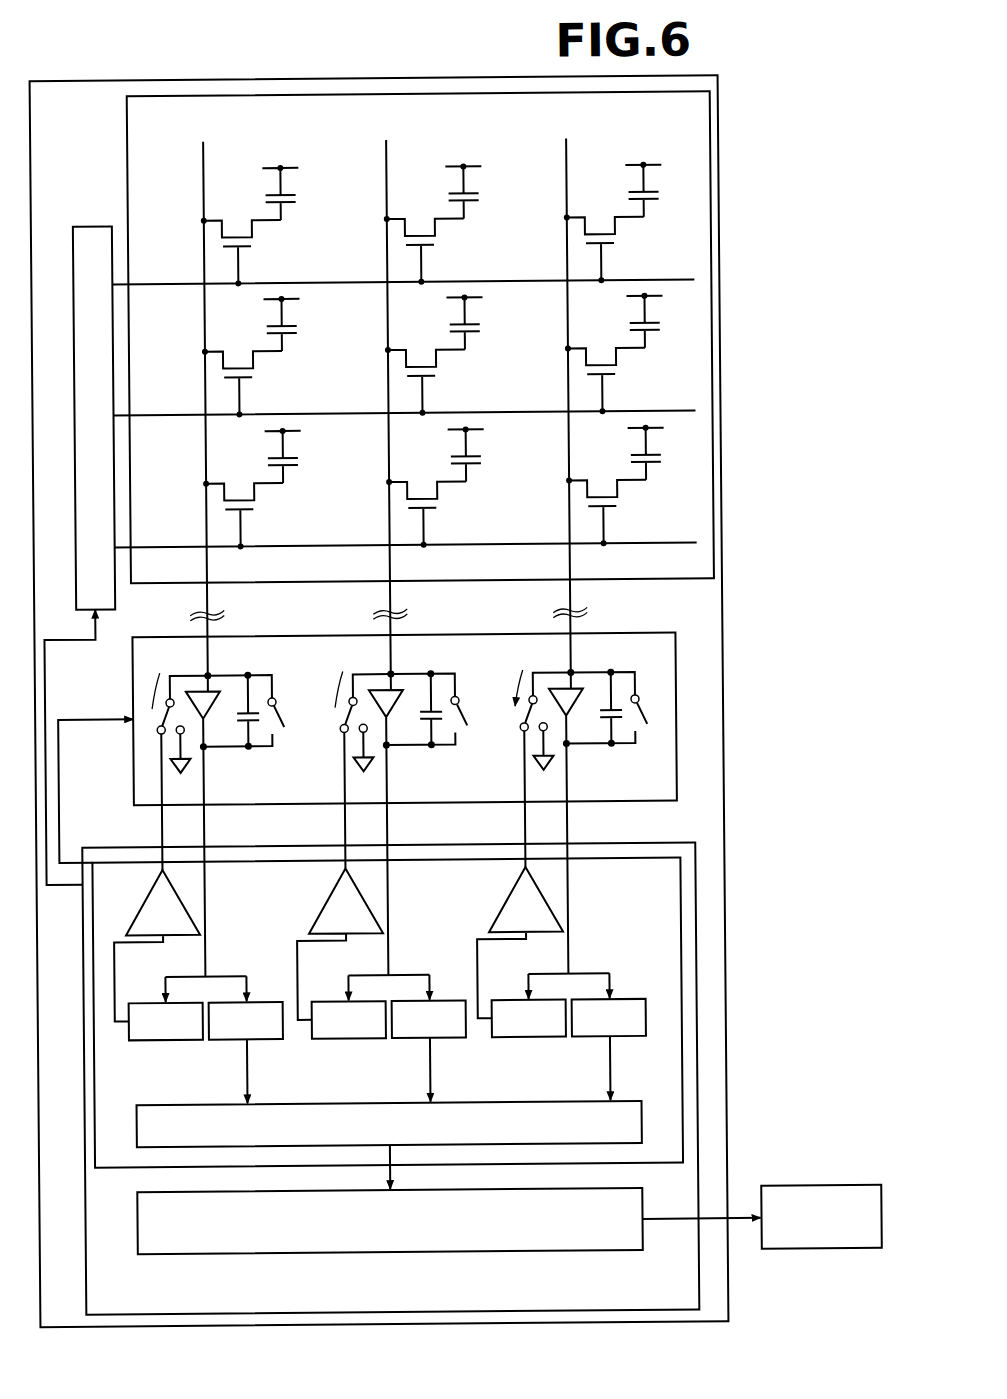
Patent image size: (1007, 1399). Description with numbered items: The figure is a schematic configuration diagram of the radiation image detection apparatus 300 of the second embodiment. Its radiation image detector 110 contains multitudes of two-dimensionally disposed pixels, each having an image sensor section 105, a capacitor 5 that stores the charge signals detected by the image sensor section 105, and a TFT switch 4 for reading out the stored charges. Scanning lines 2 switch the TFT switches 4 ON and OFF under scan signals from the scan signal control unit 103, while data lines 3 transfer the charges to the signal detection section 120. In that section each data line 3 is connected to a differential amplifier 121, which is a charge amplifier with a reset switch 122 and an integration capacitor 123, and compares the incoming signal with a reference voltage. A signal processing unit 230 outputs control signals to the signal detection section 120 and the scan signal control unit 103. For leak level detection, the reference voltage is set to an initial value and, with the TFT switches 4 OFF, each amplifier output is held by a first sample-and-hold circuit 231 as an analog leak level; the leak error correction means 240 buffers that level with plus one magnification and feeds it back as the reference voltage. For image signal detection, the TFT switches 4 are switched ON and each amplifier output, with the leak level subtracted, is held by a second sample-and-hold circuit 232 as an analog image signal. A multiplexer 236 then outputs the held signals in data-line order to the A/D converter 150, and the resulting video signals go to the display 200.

The scanning line 2 is at (699, 519).
The data line 3 is at (602, 564).
The TFT switch 4 is at (623, 238).
The capacitor 5 is at (671, 189).
The scan signal control unit 103 is at (94, 224).
The image sensor section 105 is at (450, 323).
The radiation image detector 110 is at (716, 463).
The signal detection section 120 is at (676, 670).
The differential amplifier 121 is at (564, 664).
The reset switch 122 is at (645, 700).
The integration capacitor 123 is at (606, 732).
The A/D converter 150 is at (388, 1252).
The display 200 is at (822, 1189).
The signal processing unit 230 is at (694, 1001).
The first sample-and-hold circuit 231 is at (521, 1001).
The second sample-and-hold circuit 232 is at (635, 1001).
The multiplexer 236 is at (392, 1103).
The leak error correction means 240 is at (679, 1038).
The radiation image detection apparatus 300 is at (723, 716).